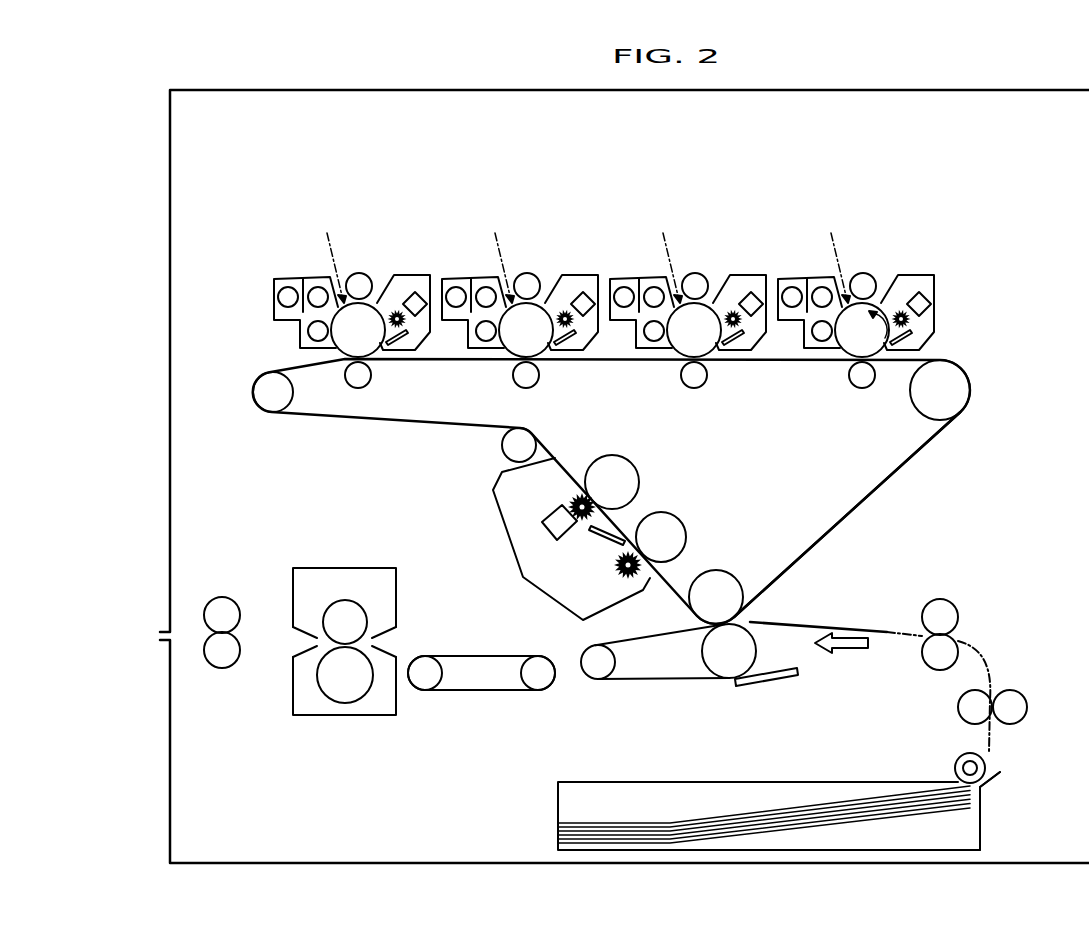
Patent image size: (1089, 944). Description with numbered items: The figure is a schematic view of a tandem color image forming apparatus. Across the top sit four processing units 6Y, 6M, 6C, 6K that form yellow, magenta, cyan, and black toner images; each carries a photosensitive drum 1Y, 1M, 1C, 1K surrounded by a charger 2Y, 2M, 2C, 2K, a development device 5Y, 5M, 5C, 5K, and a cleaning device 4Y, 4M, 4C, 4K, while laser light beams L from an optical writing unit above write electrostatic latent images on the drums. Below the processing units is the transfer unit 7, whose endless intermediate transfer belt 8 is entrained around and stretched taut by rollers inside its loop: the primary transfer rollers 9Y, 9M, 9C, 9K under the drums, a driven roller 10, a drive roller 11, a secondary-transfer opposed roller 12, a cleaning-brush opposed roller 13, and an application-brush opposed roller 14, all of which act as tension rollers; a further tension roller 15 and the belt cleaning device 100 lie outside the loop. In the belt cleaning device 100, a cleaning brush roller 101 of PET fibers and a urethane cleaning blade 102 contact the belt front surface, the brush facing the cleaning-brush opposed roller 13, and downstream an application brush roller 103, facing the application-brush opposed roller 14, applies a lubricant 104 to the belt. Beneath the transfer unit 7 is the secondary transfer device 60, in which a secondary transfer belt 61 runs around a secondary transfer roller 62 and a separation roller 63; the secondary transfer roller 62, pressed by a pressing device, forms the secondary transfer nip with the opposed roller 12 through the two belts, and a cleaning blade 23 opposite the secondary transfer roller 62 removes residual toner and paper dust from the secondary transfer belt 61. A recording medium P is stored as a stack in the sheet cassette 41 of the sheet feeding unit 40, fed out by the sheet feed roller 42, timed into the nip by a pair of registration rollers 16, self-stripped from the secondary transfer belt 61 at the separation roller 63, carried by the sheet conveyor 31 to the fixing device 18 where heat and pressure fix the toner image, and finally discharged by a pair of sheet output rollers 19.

The photosensitive drum 1Y is at (347, 341).
The photosensitive drum 1M is at (526, 330).
The photosensitive drum 1C is at (694, 330).
The photosensitive drum 1K is at (862, 330).
The charger 2Y is at (363, 273).
The charger 2M is at (535, 269).
The charger 2C is at (702, 269).
The charger 2K is at (870, 269).
The cleaning device 4Y is at (402, 275).
The cleaning device 4M is at (571, 294).
The cleaning device 4C is at (739, 294).
The cleaning device 4K is at (907, 294).
The development device 5Y is at (295, 278).
The development device 5M is at (471, 293).
The development device 5C is at (640, 293).
The development device 5K is at (808, 293).
The processing unit 6Y is at (398, 229).
The processing unit 6M is at (517, 276).
The processing unit 6C is at (686, 276).
The processing unit 6K is at (854, 286).
The primary transfer roller 9Y is at (372, 375).
The primary transfer roller 9M is at (553, 375).
The primary transfer roller 9C is at (720, 375).
The primary transfer roller 9K is at (837, 385).
The laser light beam L is at (329, 234).
The transfer unit 7 is at (975, 373).
The intermediate transfer belt 8 is at (870, 498).
The driven roller 10 is at (295, 392).
The drive roller 11 is at (917, 404).
The secondary-transfer opposed roller 12 is at (731, 572).
The cleaning-brush opposed roller 13 is at (686, 525).
The application-brush opposed roller 14 is at (636, 466).
The tension roller 15 is at (502, 446).
The pair of registration rollers 16 is at (938, 600).
The fixing device 18 is at (345, 568).
The pair of sheet output rollers 19 is at (222, 597).
The cleaning blade 23 is at (790, 683).
The sheet conveyor 31 is at (473, 698).
The sheet feeding unit 40 is at (548, 815).
The sheet cassette 41 is at (983, 820).
The sheet feed roller 42 is at (962, 755).
The secondary transfer device 60 is at (730, 693).
The secondary transfer belt 61 is at (665, 681).
The secondary transfer roller 62 is at (702, 650).
The separation roller 63 is at (598, 680).
The belt cleaning device 100 is at (522, 579).
The cleaning brush roller 101 is at (619, 573).
The cleaning blade 102 is at (606, 541).
The application brush roller 103 is at (569, 504).
The lubricant 104 is at (545, 534).
The recording medium P is at (838, 628).